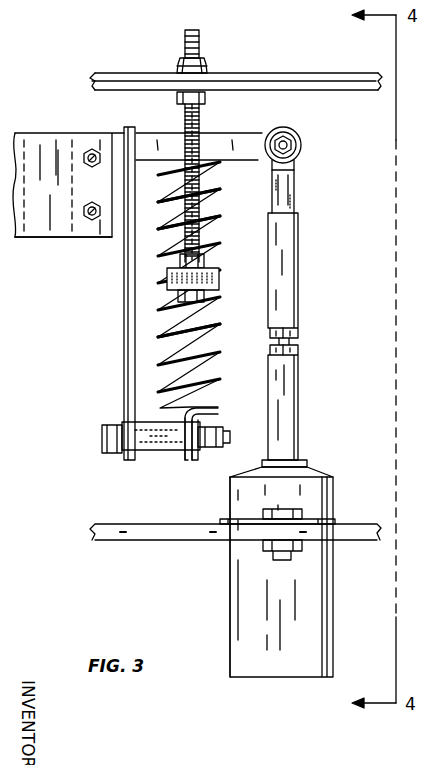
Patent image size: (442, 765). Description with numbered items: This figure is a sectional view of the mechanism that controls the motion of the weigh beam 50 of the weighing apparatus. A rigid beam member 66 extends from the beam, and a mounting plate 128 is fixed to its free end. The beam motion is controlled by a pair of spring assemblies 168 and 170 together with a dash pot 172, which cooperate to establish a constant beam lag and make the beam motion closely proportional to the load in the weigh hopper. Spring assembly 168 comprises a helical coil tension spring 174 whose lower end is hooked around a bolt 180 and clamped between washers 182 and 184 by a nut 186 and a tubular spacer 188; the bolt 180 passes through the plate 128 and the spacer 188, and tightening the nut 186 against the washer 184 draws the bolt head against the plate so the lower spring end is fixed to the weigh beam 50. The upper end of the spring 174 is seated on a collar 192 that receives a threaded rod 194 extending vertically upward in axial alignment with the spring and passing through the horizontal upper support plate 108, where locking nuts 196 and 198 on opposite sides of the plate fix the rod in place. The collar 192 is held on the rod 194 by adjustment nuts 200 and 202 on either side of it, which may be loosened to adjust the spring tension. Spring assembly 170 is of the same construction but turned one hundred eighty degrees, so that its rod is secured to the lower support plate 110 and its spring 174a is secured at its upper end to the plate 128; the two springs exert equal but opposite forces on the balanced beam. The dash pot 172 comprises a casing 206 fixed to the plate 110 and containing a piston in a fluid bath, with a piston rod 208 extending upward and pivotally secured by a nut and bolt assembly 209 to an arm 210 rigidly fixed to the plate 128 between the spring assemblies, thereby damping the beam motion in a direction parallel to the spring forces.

The weigh beam 50 is at (35, 133).
The rigid beam member 66 is at (40, 233).
The upper support plate 108 is at (346, 88).
The lower support plate 110 is at (354, 532).
The mounting plate 128 is at (124, 306).
The spring assembly 168 is at (158, 343).
The spring assembly 170 is at (159, 231).
The dash pot 172 is at (228, 580).
The helical coil tension spring 174 is at (212, 324).
The helical coil tension spring 174a is at (224, 184).
The bolt 180 is at (231, 437).
The washer 182 is at (185, 462).
The washer 184 is at (197, 462).
The nut 186 is at (205, 422).
The tubular spacer 188 is at (142, 455).
The collar 192 is at (212, 276).
The threaded rod 194 is at (200, 130).
The locking nut 196 is at (207, 69).
The locking nut 198 is at (177, 98).
The adjustment nut 200 is at (194, 264).
The adjustment nut 202 is at (198, 296).
The casing 206 is at (316, 592).
The piston rod 208 is at (292, 404).
The nut and bolt assembly 209 is at (300, 145).
The arm 210 is at (249, 138).